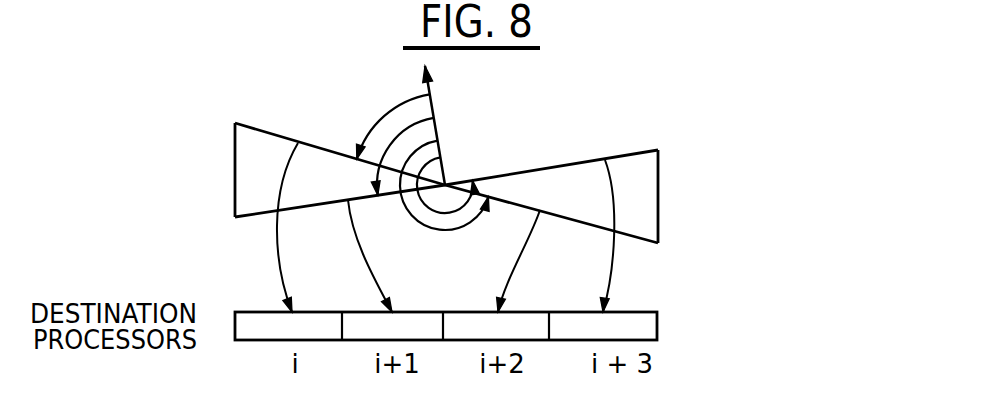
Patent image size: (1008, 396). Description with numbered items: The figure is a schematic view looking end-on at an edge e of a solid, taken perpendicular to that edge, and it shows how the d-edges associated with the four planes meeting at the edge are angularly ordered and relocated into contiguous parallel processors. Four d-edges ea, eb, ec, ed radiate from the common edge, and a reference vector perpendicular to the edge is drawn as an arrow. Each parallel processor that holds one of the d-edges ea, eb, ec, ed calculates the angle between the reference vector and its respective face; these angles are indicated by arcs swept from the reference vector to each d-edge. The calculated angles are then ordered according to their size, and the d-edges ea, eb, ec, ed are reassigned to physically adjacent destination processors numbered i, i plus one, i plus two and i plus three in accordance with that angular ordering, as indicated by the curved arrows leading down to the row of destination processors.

The d-edge ec is at (266, 131).
The d-edge ed is at (252, 216).
The d-edge eb is at (637, 152).
The d-edge ea is at (637, 245).